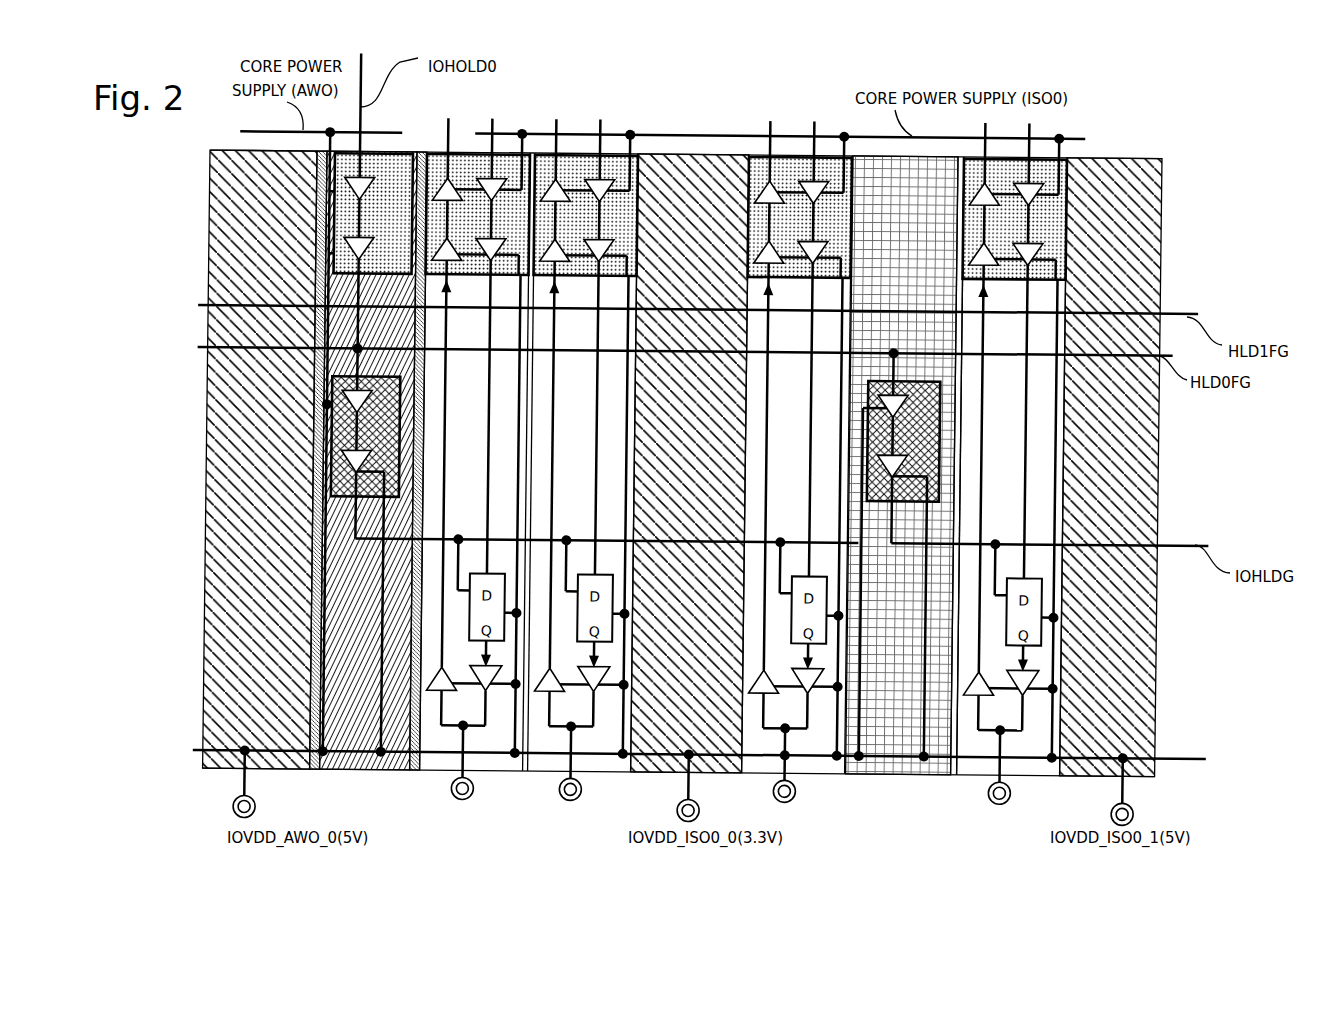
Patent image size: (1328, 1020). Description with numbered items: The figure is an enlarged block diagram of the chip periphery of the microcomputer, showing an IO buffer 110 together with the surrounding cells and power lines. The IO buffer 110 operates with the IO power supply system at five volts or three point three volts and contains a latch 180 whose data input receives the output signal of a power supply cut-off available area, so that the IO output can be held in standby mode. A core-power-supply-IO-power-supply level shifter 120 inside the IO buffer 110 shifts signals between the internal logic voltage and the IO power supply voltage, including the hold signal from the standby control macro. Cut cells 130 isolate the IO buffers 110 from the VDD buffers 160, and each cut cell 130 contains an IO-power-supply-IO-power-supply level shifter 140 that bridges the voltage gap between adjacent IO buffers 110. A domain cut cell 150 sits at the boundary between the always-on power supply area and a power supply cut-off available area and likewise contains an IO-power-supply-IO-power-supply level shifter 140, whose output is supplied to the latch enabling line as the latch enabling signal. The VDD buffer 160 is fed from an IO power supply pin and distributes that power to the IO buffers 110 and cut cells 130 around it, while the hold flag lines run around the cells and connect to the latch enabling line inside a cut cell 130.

The IO buffer 110 is at (492, 762).
The core-power-supply-IO-power-supply level shifter 120 is at (403, 157).
The cut cell 130 is at (892, 762).
The IO-power-supply-IO-power-supply level shifter 140 is at (405, 440).
The domain cut cell 150 is at (347, 757).
The VDD buffer 160 is at (270, 768).
The latch 180 is at (482, 573).